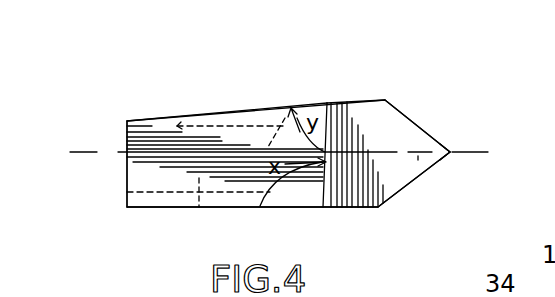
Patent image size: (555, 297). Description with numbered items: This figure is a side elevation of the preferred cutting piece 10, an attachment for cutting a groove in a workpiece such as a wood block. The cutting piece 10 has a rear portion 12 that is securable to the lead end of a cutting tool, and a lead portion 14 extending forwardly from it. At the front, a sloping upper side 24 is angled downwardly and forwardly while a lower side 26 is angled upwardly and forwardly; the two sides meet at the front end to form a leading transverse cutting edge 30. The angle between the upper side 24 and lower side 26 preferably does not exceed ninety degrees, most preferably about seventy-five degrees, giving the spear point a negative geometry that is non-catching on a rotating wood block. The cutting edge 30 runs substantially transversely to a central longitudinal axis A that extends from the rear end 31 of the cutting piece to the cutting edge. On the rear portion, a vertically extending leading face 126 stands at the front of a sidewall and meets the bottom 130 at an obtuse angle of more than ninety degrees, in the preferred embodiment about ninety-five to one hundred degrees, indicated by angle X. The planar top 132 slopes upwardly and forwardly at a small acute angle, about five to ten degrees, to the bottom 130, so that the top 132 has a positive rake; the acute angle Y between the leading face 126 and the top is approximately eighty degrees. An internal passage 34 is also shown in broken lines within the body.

The cutting piece 10 is at (326, 81).
The rear portion 12 is at (170, 202).
The lead portion 14 is at (388, 106).
The sloping upper side 24 is at (418, 127).
The lower side 26 is at (430, 166).
The leading transverse cutting edge 30 is at (450, 152).
The rear end 31 is at (126, 183).
The internal passage 34 is at (243, 135).
The leading face 126 is at (333, 194).
The bottom 130 is at (277, 207).
The top 132 is at (155, 118).
The central longitudinal axis A is at (418, 156).